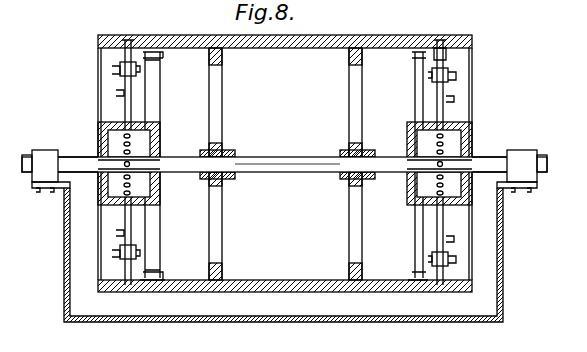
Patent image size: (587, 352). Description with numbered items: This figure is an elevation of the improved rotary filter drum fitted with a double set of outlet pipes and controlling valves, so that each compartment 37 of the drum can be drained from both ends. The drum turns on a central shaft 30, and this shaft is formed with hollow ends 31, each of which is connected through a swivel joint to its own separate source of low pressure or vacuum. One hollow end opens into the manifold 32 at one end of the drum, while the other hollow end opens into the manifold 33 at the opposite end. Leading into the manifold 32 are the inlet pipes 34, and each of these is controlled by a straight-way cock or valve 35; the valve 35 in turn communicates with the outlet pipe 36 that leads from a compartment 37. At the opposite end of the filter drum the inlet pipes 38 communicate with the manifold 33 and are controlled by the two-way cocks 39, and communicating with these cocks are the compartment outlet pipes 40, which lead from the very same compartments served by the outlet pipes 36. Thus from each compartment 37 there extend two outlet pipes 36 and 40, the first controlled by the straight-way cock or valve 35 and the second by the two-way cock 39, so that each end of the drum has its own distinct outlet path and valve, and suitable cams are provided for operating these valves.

The shaft 30 is at (296, 152).
The hollow ends 31 is at (72, 158).
The manifold 32 is at (160, 146).
The manifold 33 is at (368, 150).
The inlet pipes 34 is at (125, 100).
The straight-way cock or valve 35 is at (135, 70).
The outlet pipe 36 is at (125, 56).
The compartments 37 is at (200, 40).
The inlet pipes 38 is at (443, 106).
The two-way cocks 39 is at (452, 78).
The compartment outlet pipes 40 is at (443, 58).